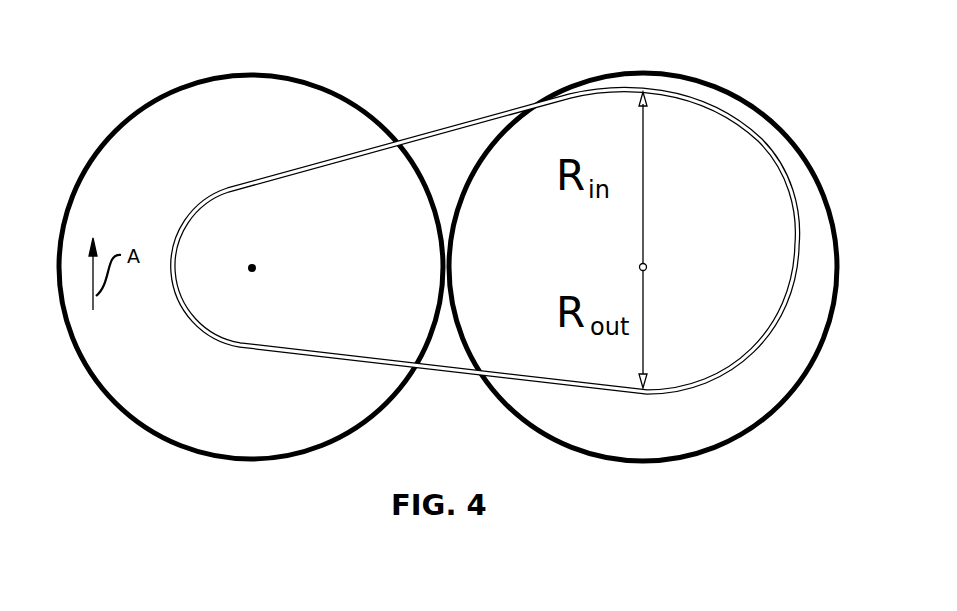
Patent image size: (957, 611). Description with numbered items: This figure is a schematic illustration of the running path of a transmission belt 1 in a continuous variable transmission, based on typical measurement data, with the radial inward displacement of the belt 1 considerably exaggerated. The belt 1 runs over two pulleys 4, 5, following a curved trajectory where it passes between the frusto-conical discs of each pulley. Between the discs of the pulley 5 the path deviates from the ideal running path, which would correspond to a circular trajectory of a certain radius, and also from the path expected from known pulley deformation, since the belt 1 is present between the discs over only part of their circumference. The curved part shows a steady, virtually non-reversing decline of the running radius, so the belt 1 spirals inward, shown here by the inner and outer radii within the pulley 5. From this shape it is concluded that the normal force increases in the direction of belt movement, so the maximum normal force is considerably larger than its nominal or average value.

The transmission belt 1 is at (460, 128).
The pulley 4 is at (115, 153).
The pulley 5 is at (748, 112).